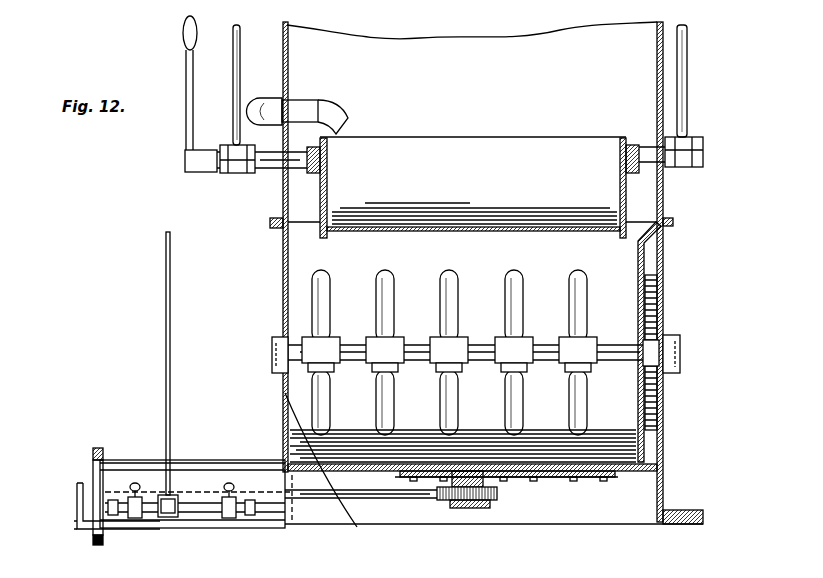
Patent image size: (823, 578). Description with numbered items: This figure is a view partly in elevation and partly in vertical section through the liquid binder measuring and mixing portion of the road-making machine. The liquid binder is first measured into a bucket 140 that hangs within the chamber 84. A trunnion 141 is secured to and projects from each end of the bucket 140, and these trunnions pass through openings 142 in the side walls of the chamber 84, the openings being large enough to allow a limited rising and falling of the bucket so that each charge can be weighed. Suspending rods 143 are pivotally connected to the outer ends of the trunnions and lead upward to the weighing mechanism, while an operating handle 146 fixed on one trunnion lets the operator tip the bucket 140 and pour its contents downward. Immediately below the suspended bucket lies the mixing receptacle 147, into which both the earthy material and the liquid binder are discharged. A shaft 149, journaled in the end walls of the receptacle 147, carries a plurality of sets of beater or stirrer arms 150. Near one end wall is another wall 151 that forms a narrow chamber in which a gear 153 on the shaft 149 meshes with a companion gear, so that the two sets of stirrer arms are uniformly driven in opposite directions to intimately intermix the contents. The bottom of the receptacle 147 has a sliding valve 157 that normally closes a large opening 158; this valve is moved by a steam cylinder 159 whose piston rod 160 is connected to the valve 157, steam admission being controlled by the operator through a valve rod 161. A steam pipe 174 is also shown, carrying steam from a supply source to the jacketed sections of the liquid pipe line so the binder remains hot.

The chamber 84 is at (286, 23).
The bucket 140 is at (455, 145).
The trunnion 141 is at (262, 168).
The openings 142 is at (280, 173).
The suspending rods 143 is at (234, 84).
The operating handle 146 is at (184, 52).
The receptacle 147 is at (276, 310).
The shaft 149 is at (486, 372).
The beater or stirrer arms 150 is at (506, 298).
The wall 151 is at (639, 254).
The gear 153 is at (660, 414).
The sliding valve 157 is at (498, 470).
The opening 158 is at (457, 470).
The steam cylinder 159 is at (220, 460).
The rod 160 is at (390, 505).
The valve rod 161 is at (170, 402).
The steam pipe 174 is at (76, 482).